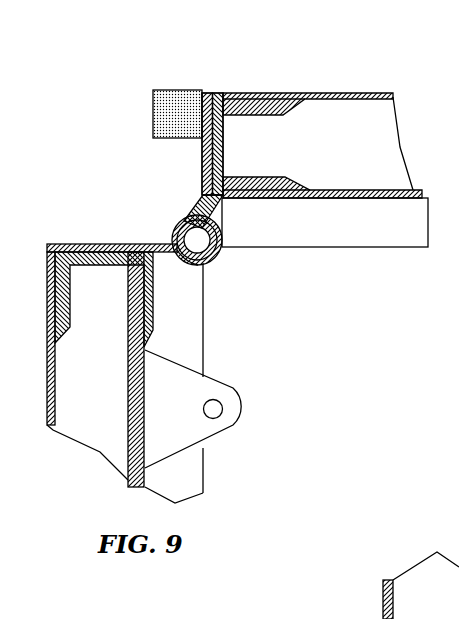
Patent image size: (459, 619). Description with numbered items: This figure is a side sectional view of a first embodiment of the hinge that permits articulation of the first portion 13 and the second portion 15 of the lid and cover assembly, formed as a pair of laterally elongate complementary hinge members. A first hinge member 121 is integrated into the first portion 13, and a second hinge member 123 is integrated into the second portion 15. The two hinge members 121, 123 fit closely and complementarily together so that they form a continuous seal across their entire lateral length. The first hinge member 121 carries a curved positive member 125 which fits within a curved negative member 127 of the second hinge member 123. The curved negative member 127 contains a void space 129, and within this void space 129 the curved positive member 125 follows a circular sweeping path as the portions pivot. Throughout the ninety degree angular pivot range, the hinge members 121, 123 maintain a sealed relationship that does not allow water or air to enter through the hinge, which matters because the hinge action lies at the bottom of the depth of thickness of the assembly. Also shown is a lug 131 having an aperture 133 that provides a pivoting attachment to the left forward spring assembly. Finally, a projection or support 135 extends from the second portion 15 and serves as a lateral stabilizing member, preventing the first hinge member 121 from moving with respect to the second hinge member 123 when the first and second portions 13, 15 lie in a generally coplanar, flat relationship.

The first portion 13 is at (90, 418).
The second portion 15 is at (345, 117).
The first hinge member 121 is at (95, 243).
The second hinge member 123 is at (218, 92).
The curved positive member 125 is at (187, 217).
The curved negative member 127 is at (203, 267).
The void space 129 is at (210, 253).
The lug 131 is at (215, 405).
The aperture 133 is at (238, 405).
The projection or support 135 is at (175, 90).